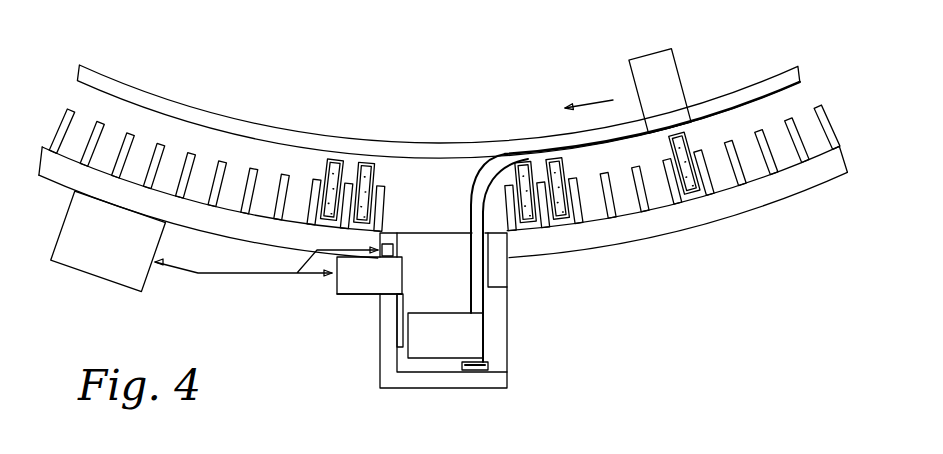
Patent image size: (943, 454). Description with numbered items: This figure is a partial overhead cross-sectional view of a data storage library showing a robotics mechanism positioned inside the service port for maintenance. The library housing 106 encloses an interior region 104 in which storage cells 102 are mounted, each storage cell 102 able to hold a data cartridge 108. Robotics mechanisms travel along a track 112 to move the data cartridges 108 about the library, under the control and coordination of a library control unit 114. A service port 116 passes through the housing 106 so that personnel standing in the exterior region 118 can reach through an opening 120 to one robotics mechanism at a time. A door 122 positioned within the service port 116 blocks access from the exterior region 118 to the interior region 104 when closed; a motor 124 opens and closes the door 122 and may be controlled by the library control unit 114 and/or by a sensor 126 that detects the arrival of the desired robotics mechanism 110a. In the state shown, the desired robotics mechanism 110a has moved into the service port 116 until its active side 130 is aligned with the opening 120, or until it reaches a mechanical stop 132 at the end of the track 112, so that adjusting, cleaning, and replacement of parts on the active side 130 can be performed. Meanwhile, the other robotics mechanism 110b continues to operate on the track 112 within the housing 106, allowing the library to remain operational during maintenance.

The storage cell 102 is at (743, 128).
The interior region 104 is at (631, 30).
The housing 106 is at (686, 224).
The data cartridge 108 is at (674, 141).
The desired robotics mechanism 110a is at (445, 353).
The other robotics mechanism 110b is at (641, 70).
The track 112 is at (230, 120).
The library control unit 114 is at (122, 268).
The service port 116 is at (380, 377).
The exterior region 118 is at (786, 357).
The opening 120 is at (522, 295).
The door 122 is at (398, 325).
The motor 124 is at (360, 293).
The sensor 126 is at (367, 258).
The active side 130 is at (487, 340).
The mechanical stop 132 is at (473, 370).